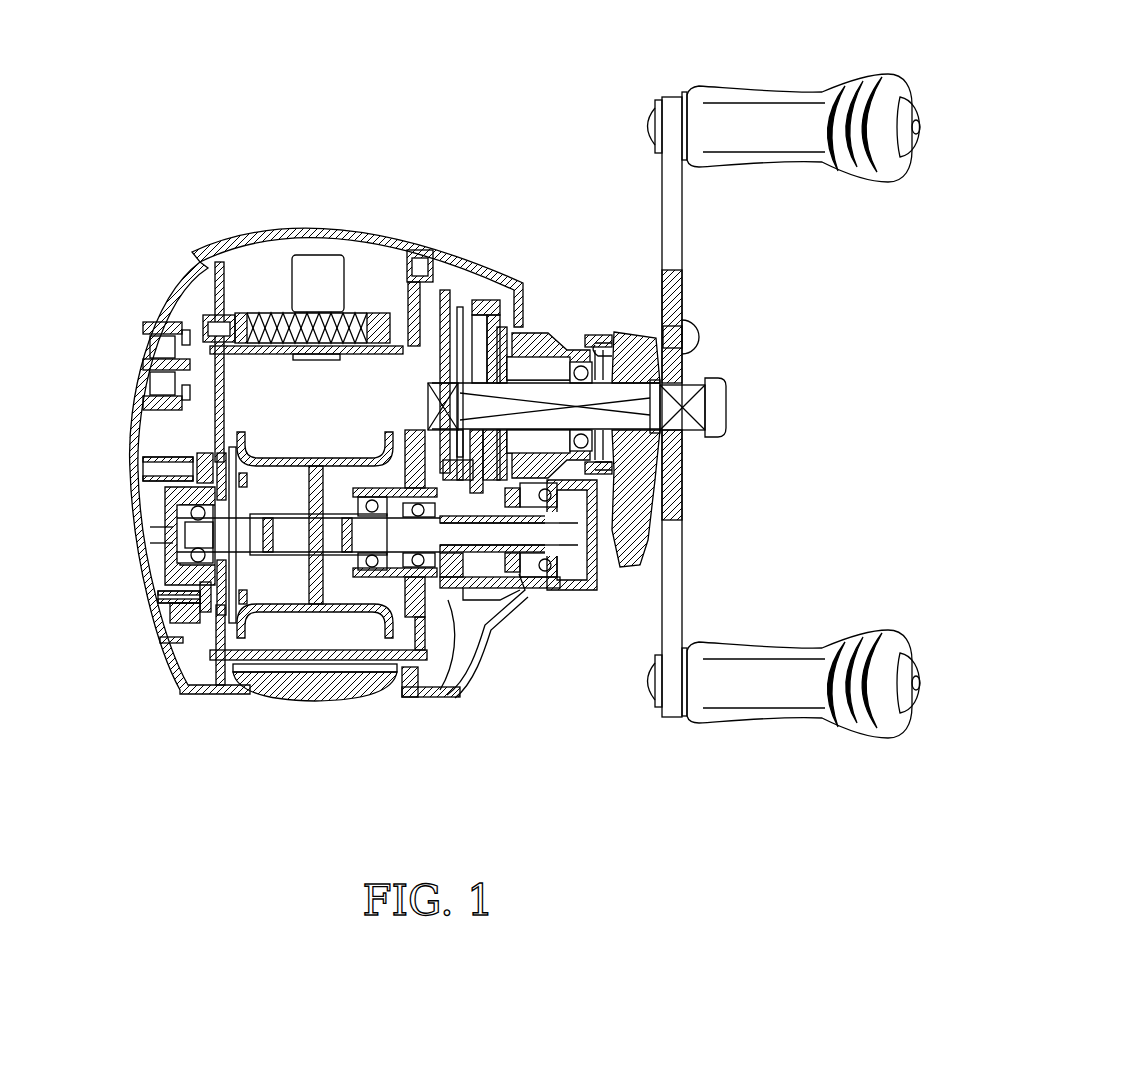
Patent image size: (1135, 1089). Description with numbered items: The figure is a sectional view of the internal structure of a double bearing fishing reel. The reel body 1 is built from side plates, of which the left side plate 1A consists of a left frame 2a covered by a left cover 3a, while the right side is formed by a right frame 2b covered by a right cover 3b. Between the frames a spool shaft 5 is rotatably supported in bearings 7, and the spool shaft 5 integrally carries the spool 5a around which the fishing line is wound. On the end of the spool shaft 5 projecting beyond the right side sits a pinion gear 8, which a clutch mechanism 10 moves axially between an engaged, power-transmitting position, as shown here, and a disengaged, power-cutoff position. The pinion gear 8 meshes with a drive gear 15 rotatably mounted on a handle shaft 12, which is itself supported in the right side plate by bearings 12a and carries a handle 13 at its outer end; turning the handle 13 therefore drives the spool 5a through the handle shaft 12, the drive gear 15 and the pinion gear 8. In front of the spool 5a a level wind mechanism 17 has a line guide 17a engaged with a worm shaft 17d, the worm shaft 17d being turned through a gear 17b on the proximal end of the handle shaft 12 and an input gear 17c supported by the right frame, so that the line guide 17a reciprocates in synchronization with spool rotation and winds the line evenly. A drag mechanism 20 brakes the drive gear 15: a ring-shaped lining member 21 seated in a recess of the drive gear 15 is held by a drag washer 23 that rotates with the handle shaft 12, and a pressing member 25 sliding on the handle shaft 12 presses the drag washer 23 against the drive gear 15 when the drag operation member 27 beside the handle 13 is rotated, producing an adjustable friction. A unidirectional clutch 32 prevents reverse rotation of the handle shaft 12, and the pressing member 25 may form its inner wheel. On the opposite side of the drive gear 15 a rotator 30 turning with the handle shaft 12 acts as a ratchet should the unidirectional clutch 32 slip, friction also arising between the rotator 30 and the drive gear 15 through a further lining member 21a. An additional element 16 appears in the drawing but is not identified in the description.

The reel body 1 is at (348, 291).
The side plate 1A is at (149, 467).
The left frame 2a is at (188, 265).
The right frame 2b is at (400, 275).
The left cover 3a is at (128, 440).
The right cover 3b is at (518, 277).
The spool shaft 5 is at (304, 715).
The spool 5a is at (257, 697).
The bearings 7 is at (158, 590).
The pinion gear 8 is at (550, 568).
The clutch mechanism 10 is at (472, 650).
The handle shaft 12 is at (564, 373).
The bearings 12a is at (690, 355).
The handle 13 is at (758, 147).
The drive gear 15 is at (493, 293).
The spool shaft 16 is at (492, 253).
The level wind mechanism 17 is at (326, 286).
The line guide 17a is at (307, 360).
The gear 17b is at (400, 437).
The input gear 17c is at (445, 262).
The worm shaft 17d is at (355, 300).
The drag mechanism 20 is at (720, 383).
The lining member 21 is at (461, 407).
The lining member 21a is at (388, 320).
The drag washer 23 is at (595, 565).
The pressing member 25 is at (678, 477).
The drag operation member 27 is at (628, 515).
The rotator 30 is at (463, 625).
The unidirectional clutch 32 is at (645, 553).